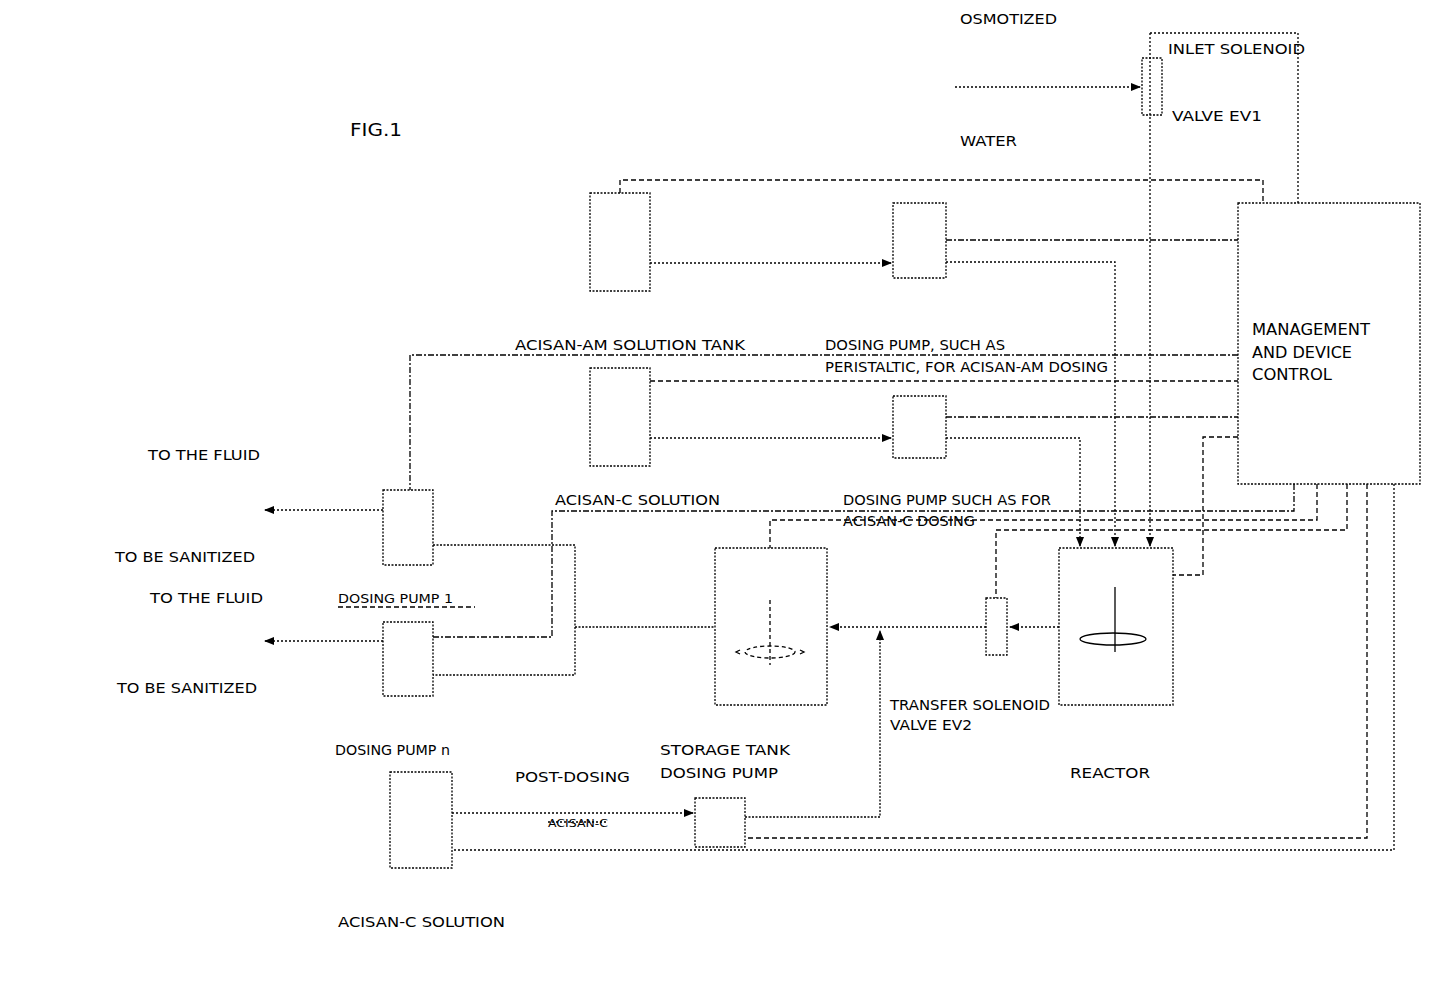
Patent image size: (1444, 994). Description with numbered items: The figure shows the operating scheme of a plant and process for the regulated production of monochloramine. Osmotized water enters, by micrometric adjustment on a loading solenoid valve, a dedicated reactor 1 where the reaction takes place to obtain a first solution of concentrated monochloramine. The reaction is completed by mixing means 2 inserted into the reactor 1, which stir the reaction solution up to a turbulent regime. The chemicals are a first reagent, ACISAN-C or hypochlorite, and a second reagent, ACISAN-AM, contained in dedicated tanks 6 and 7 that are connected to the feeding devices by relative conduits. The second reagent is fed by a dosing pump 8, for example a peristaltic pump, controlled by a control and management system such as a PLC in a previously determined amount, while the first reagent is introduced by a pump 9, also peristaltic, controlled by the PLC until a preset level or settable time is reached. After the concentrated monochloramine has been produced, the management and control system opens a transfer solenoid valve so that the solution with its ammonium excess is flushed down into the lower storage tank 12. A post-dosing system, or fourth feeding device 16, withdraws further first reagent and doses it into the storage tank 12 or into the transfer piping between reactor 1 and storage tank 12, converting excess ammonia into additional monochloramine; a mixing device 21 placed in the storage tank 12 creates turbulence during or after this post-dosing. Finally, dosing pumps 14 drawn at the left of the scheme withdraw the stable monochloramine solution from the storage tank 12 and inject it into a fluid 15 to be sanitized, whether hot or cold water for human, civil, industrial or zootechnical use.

The reactor 1 is at (1182, 690).
The mixing means 2 is at (1124, 612).
The tank for first reagent A 6 is at (598, 420).
The tank for second reagent B 7 is at (598, 243).
The dosing pump 8 is at (893, 237).
The pump 9 is at (893, 413).
The storage tank 12 is at (733, 595).
The dosing pump 14 is at (415, 520).
The fluid to be sanitized 15 is at (324, 561).
The fourth feeding device 16 is at (889, 765).
The mixing device 21 is at (784, 672).